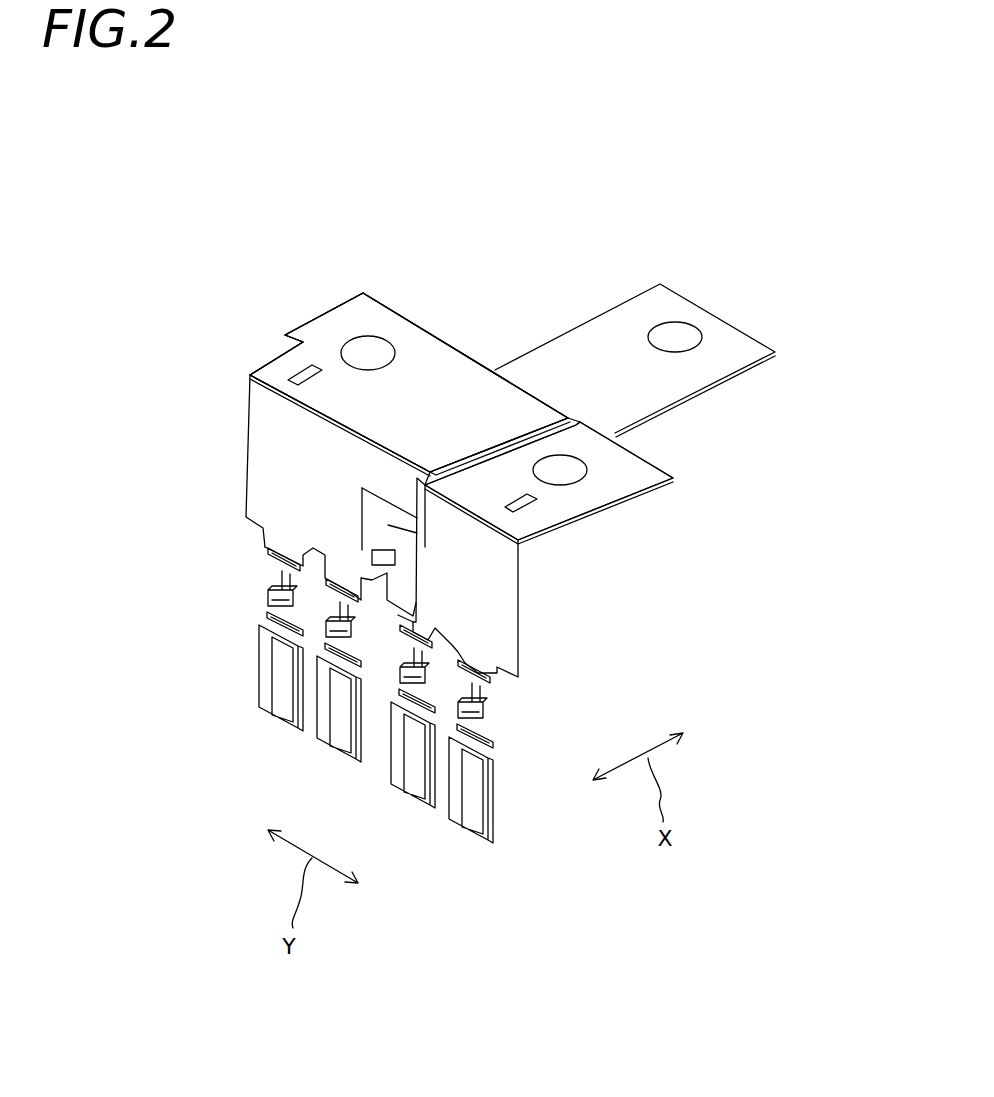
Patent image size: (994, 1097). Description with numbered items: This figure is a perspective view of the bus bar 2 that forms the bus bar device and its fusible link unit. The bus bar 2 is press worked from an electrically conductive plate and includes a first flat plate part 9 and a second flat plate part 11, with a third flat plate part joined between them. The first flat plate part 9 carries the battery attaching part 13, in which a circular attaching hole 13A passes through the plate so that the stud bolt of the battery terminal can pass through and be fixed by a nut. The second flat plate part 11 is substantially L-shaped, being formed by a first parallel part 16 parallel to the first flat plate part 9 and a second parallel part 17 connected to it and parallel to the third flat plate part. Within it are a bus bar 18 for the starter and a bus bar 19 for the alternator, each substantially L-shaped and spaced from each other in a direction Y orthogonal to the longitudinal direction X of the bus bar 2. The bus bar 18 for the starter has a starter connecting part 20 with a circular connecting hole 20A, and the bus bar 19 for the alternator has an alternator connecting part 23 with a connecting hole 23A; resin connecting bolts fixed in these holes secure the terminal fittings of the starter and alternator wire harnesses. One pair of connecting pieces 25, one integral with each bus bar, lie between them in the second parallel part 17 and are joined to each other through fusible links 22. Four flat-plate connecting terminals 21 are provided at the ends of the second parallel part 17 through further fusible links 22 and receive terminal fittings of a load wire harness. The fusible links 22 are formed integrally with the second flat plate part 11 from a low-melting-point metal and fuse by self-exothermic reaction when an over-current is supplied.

The bus bar 2 is at (650, 200).
The first flat plate part 9 is at (646, 290).
The second flat plate part 11 is at (122, 727).
The battery attaching part 13 is at (723, 358).
The attaching hole 13A is at (677, 330).
The first parallel part 16 is at (440, 427).
The second parallel part 17 is at (273, 420).
The bus bar for starter 18 is at (385, 318).
The bus bar for alternator 19 is at (625, 462).
The starter connecting part 20 is at (362, 320).
The connecting hole 20A is at (350, 362).
The connecting terminals 21 is at (280, 707).
The fusible links 22 is at (266, 597).
The alternator connecting part 23 is at (607, 478).
The connecting hole 23A is at (560, 480).
The connecting pieces 25 is at (362, 563).